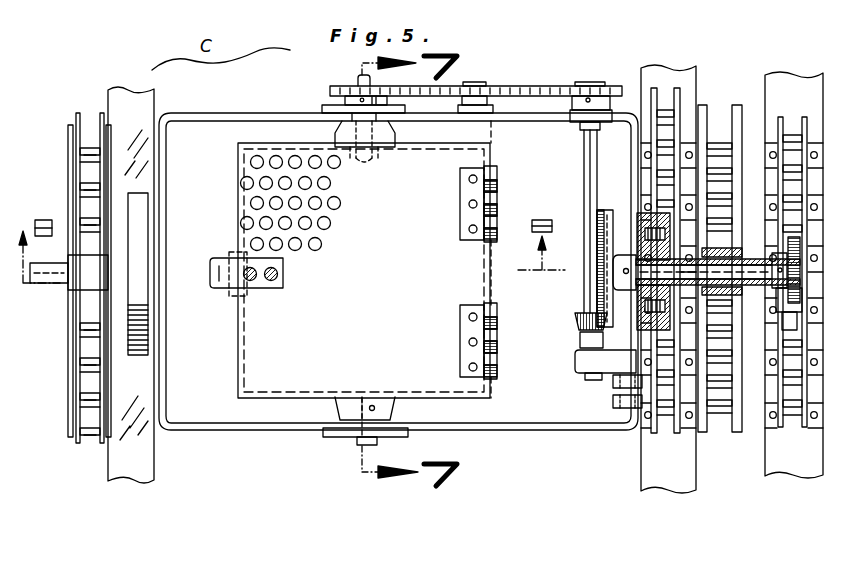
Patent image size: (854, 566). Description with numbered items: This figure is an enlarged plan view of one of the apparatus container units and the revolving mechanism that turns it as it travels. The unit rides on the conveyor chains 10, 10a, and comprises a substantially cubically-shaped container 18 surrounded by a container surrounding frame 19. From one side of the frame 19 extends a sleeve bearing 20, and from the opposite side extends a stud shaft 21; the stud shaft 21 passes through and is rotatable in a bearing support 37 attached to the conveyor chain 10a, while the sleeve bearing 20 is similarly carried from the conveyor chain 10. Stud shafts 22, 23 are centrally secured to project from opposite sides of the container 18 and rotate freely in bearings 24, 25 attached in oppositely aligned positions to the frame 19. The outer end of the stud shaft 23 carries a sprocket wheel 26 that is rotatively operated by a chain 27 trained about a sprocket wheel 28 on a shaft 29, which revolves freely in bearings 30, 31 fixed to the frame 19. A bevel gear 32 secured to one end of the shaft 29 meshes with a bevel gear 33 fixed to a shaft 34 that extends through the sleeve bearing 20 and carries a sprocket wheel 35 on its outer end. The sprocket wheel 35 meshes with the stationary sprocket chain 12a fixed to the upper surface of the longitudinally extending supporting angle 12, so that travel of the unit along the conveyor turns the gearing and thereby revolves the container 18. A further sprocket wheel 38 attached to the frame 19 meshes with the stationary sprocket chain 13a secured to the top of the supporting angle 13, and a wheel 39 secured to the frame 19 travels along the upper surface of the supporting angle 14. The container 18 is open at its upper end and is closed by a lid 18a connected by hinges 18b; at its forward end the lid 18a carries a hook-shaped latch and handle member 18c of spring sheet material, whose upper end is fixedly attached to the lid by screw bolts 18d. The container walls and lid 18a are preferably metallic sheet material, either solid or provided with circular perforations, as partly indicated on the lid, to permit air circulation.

The conveyor chain 10 is at (735, 432).
The conveyor chain 10a is at (75, 443).
The supporting angle 12 is at (810, 462).
The sprocket chain 12a is at (787, 430).
The supporting angle 13 is at (668, 468).
The sprocket chain 13a is at (660, 432).
The supporting angle 14 is at (140, 468).
The container 18 is at (478, 408).
The lid 18a is at (262, 349).
The hinges 18b is at (470, 217).
The hook-shaped latch and handle member 18c is at (222, 290).
The screw bolts 18d is at (268, 282).
The container surrounding frame 19 is at (228, 115).
The sleeve bearing 20 is at (796, 250).
The stud shaft 21 is at (47, 285).
The stud shaft 22 is at (357, 443).
The stud shaft 23 is at (355, 82).
The bearing 24 is at (342, 433).
The bearing 25 is at (322, 107).
The sprocket wheel 26 is at (387, 96).
The chain 27 is at (522, 86).
The sprocket wheel 28 is at (604, 83).
The shaft 29 is at (583, 176).
The bearing 30 is at (583, 128).
The bearing 31 is at (578, 362).
The bevel gear 32 is at (575, 323).
The bevel gear 33 is at (597, 210).
The shaft 34 is at (768, 277).
The sprocket wheel 35 is at (790, 246).
The bearing support 37 is at (88, 272).
The sprocket wheel 38 is at (658, 205).
The wheel 39 is at (135, 207).